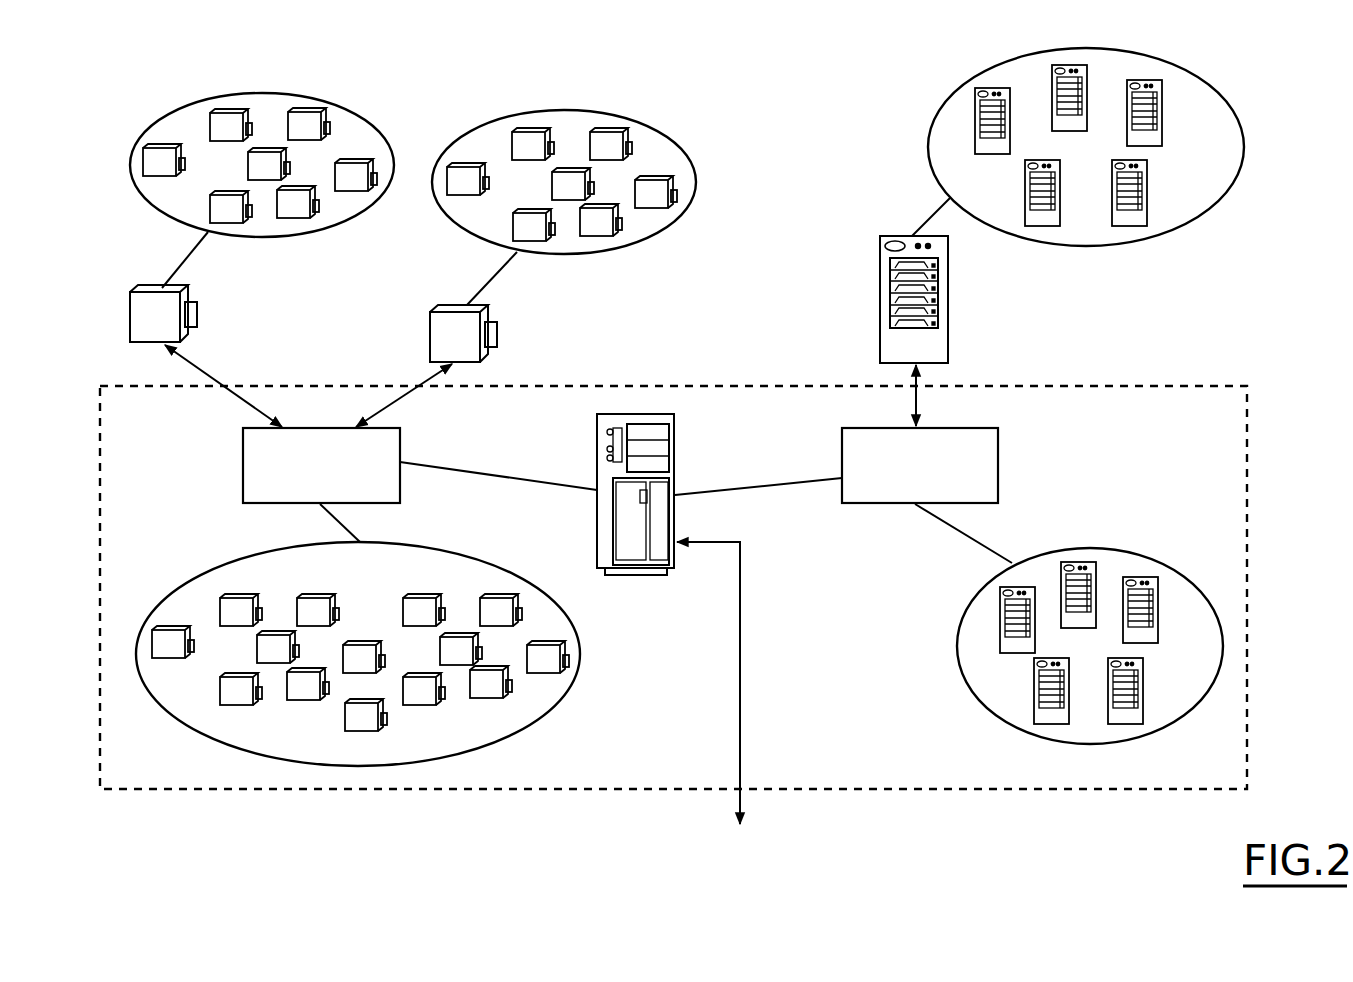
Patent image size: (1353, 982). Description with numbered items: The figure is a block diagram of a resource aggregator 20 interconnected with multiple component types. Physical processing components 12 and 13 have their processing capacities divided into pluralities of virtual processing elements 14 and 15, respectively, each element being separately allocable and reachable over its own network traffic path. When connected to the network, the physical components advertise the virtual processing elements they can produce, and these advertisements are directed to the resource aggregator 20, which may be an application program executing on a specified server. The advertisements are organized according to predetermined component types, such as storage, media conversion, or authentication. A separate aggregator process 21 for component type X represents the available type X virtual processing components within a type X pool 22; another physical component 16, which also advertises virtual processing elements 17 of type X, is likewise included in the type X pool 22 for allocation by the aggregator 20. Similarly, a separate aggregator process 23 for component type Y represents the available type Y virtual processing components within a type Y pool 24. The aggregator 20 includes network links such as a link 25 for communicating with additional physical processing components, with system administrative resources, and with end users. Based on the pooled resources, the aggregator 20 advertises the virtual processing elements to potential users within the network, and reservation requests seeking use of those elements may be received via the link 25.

The physical processing component 12 is at (492, 308).
The physical processing component 13 is at (948, 295).
The virtual processing elements 14 is at (664, 137).
The virtual processing elements 15 is at (940, 107).
The physical component 16 is at (190, 292).
The virtual processing elements 17 is at (338, 104).
The resource aggregator 20 is at (675, 445).
The aggregator process 21 is at (403, 445).
The type X pool 22 is at (488, 565).
The aggregator process 23 is at (1000, 455).
The type Y pool 24 is at (1120, 548).
The link 25 is at (740, 655).